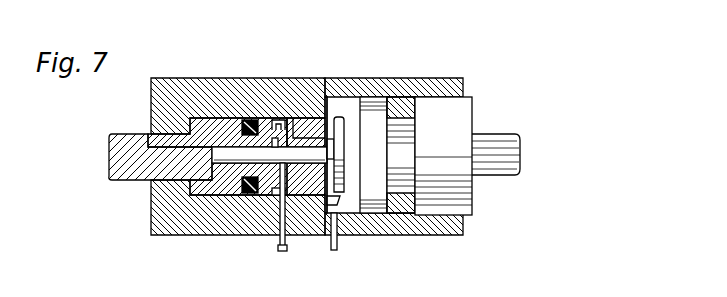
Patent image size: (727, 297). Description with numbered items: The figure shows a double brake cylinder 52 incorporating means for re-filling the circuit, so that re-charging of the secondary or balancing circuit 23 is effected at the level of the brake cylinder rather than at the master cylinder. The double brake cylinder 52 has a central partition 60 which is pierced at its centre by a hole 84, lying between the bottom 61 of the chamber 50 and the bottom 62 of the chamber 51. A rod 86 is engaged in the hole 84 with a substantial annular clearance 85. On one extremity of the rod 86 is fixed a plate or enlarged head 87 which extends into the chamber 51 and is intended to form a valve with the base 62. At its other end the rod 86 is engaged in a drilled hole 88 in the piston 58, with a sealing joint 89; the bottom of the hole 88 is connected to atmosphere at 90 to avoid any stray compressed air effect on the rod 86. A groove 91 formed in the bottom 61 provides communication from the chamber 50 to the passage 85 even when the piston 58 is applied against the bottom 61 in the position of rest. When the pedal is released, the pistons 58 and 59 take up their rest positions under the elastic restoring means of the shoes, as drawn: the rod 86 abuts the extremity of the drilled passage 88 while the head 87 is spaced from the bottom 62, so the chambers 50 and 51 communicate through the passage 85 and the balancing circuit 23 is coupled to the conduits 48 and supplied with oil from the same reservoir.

The double brake cylinder 52 is at (160, 84).
The chamber 51 is at (400, 223).
The atmosphere connection 90 is at (147, 133).
The piston 58 is at (211, 127).
The annular clearance 85 is at (309, 140).
The chamber 50 is at (289, 116).
The groove 91 is at (287, 128).
The rod 86 is at (299, 152).
The drilled hole 88 is at (209, 160).
The sealing joint 89 is at (258, 192).
The bottom of chamber 61 is at (278, 197).
The conduits 48 is at (282, 251).
The central partition 60 is at (306, 223).
The plate or enlarged head 87 is at (339, 150).
The hole 84 is at (323, 204).
The secondary circuit 23 is at (339, 243).
The bottom of chamber 62 is at (352, 190).
The piston 59 is at (437, 116).